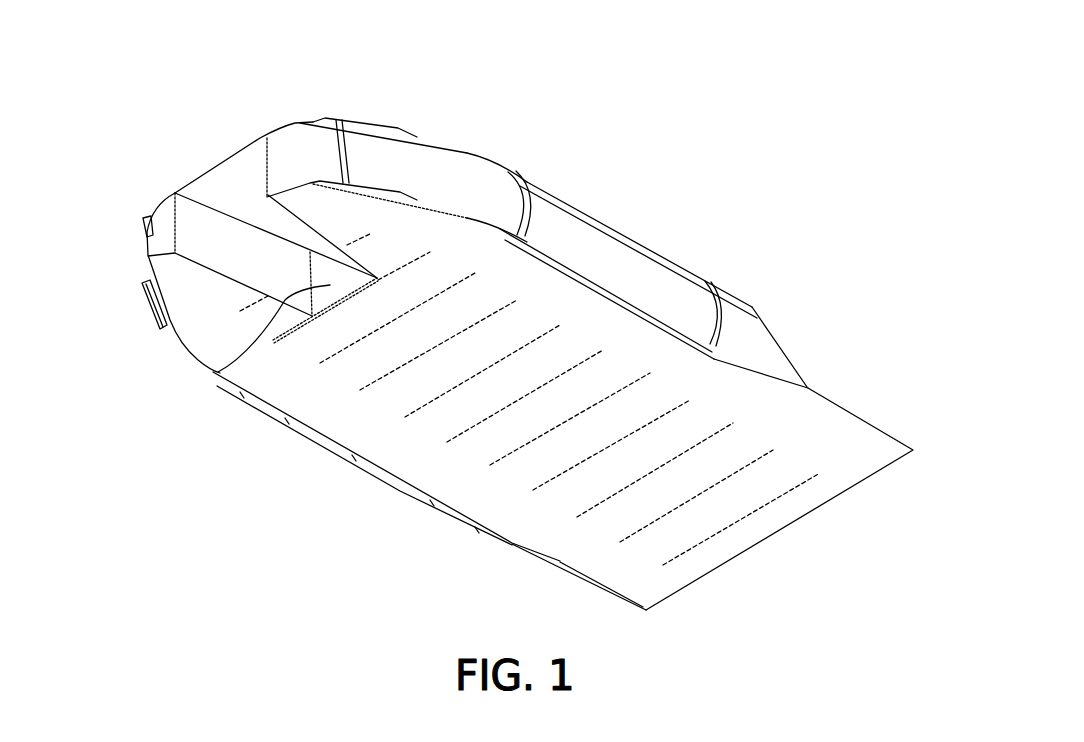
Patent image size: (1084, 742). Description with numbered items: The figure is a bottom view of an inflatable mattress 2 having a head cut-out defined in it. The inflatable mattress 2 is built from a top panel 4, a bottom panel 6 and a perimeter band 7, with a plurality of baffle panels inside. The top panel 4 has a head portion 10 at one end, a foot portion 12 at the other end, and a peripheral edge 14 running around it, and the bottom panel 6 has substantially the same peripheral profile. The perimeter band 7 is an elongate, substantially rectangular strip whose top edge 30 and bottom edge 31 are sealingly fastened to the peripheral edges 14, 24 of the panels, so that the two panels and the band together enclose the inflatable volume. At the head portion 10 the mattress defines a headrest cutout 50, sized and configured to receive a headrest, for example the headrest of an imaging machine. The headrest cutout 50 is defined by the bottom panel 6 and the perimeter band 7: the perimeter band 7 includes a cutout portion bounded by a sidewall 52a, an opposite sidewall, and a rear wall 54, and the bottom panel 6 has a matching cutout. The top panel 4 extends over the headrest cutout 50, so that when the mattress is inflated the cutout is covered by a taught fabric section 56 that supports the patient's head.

The inflatable mattress 2 is at (708, 144).
The top panel 4 is at (588, 210).
The bottom panel 6 is at (636, 575).
The perimeter band 7 is at (667, 288).
The head portion 10 is at (177, 119).
The foot portion 12 is at (808, 548).
The peripheral edge 14 is at (630, 247).
The peripheral edge 24 is at (545, 250).
The top edge 30 is at (733, 308).
The bottom edge 31 is at (741, 360).
The headrest cutout 50 is at (218, 189).
The sidewall 52a is at (210, 230).
The rear wall 54 is at (218, 372).
The taught fabric section 56 is at (257, 163).